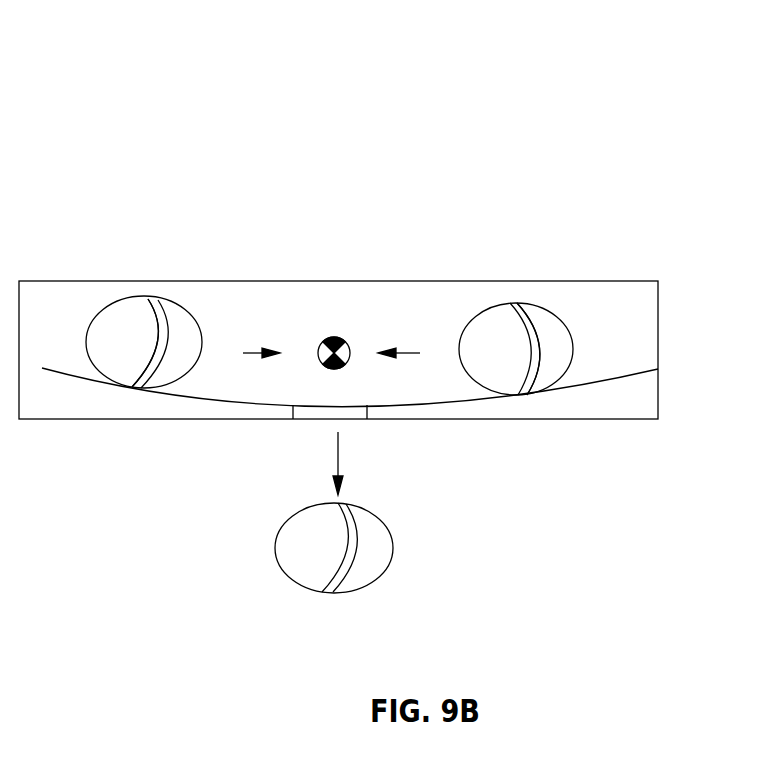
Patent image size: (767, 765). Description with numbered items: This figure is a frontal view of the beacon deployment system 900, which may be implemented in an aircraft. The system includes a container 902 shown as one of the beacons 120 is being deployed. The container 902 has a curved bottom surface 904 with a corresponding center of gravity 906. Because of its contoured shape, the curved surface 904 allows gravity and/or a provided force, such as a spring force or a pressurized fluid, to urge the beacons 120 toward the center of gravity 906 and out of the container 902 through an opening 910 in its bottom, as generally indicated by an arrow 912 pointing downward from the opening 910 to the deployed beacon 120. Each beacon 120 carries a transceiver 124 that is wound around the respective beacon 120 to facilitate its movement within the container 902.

The beacon deployment system 900 is at (532, 95).
The container 902 is at (543, 281).
The curved bottom surface 904 is at (240, 407).
The center of gravity 906 is at (348, 338).
The opening 910 is at (307, 410).
The arrow 912 is at (339, 462).
The beacon 120 is at (140, 323).
The transceiver 124 is at (162, 327).